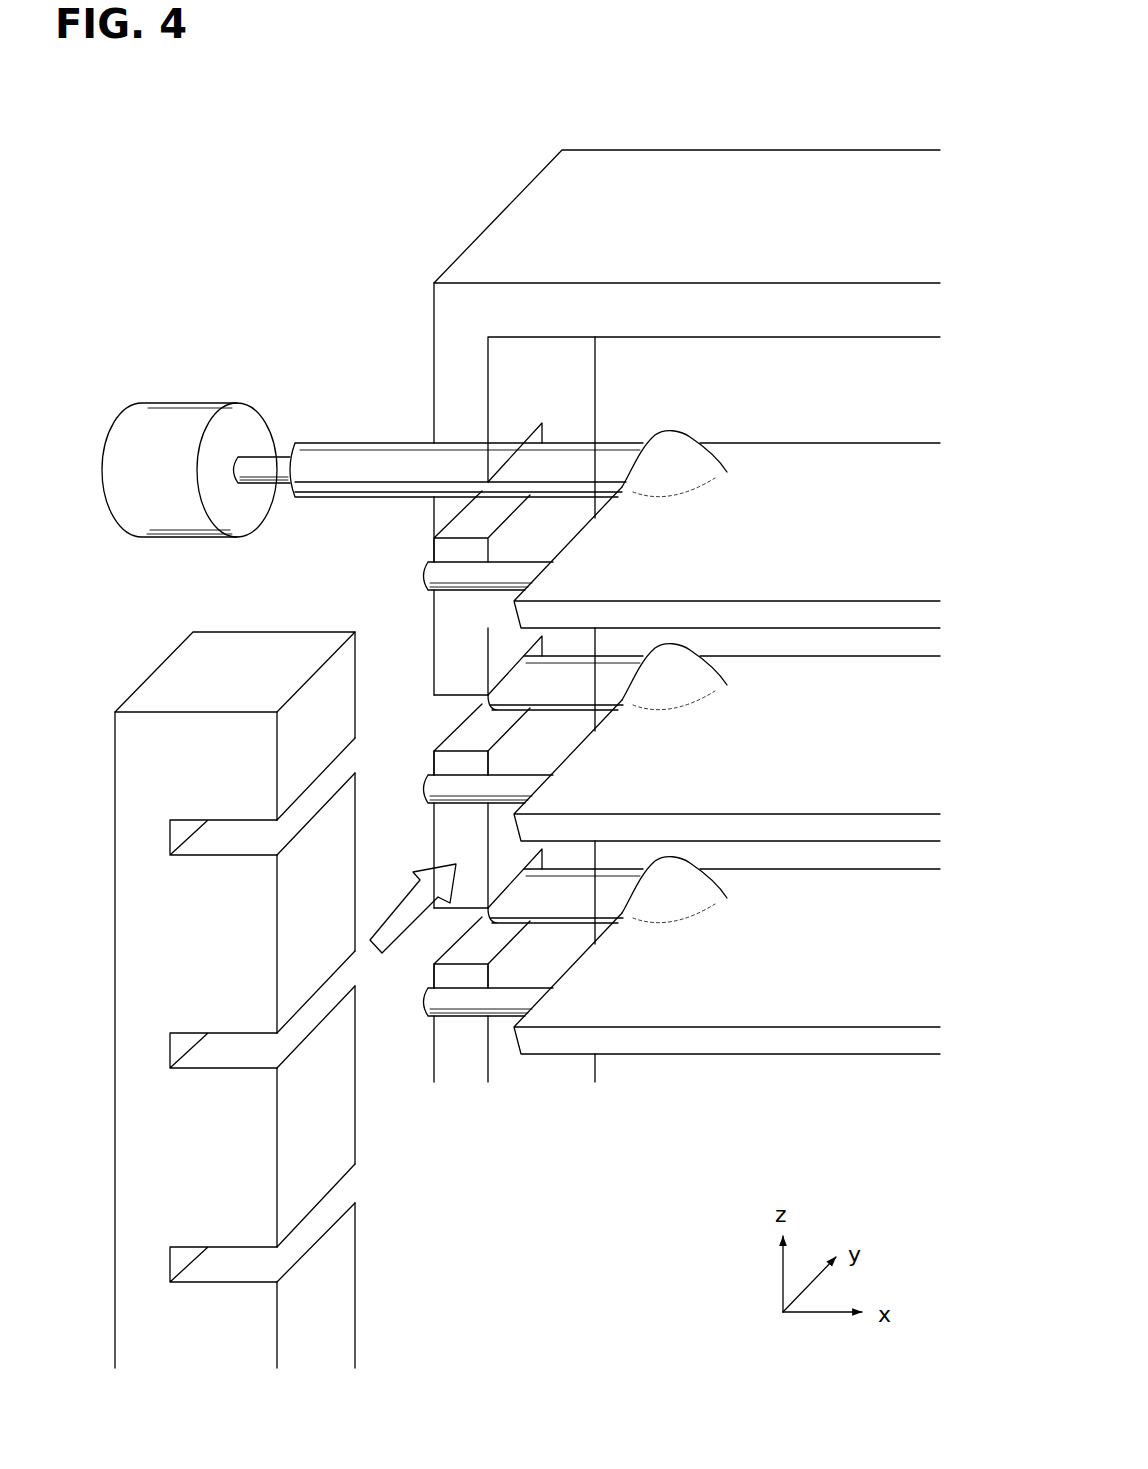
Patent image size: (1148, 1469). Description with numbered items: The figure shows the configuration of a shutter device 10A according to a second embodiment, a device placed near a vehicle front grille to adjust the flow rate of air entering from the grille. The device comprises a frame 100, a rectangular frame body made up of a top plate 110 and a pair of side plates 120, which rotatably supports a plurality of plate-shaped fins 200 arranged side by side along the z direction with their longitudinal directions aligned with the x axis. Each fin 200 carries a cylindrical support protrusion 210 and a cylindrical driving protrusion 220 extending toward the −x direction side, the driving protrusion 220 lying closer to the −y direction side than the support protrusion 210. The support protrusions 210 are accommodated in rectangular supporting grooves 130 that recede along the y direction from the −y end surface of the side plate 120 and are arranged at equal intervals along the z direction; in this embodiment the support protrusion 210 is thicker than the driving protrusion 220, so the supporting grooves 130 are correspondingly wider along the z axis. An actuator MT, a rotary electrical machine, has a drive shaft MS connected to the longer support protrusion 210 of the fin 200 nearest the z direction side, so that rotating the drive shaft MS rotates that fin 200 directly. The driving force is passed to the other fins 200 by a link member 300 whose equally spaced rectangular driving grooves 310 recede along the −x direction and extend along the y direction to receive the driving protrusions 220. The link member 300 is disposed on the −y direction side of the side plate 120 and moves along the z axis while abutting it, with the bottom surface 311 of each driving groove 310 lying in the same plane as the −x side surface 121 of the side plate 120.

The shutter device 10A is at (397, 194).
The frame 100 is at (640, 146).
The top plate 110 is at (747, 170).
The side plate 120 is at (432, 345).
The surface of the side plate 121 is at (428, 402).
The supporting groove 130 is at (442, 508).
The fin 200 is at (845, 465).
The support protrusion 210 is at (607, 462).
The driving protrusion 220 is at (456, 581).
The link member 300 is at (236, 648).
The driving groove 310 is at (354, 756).
The bottom surface of the driving groove 311 is at (181, 830).
The actuator MT is at (176, 403).
The drive shaft MS is at (259, 470).